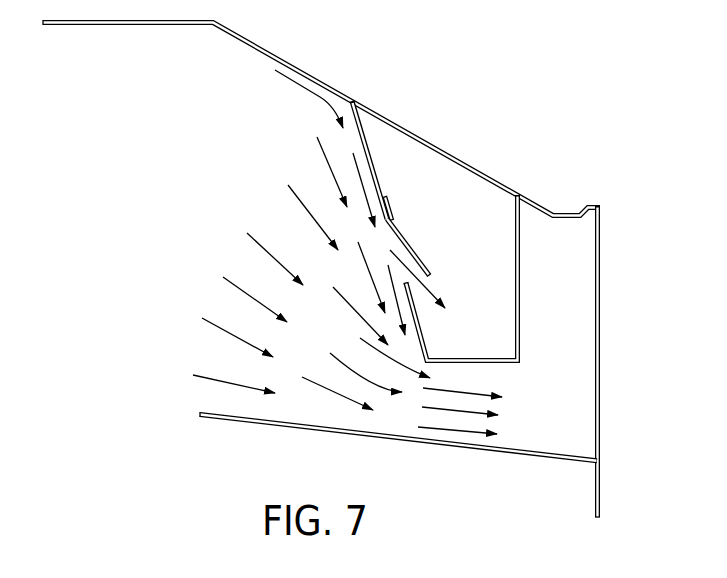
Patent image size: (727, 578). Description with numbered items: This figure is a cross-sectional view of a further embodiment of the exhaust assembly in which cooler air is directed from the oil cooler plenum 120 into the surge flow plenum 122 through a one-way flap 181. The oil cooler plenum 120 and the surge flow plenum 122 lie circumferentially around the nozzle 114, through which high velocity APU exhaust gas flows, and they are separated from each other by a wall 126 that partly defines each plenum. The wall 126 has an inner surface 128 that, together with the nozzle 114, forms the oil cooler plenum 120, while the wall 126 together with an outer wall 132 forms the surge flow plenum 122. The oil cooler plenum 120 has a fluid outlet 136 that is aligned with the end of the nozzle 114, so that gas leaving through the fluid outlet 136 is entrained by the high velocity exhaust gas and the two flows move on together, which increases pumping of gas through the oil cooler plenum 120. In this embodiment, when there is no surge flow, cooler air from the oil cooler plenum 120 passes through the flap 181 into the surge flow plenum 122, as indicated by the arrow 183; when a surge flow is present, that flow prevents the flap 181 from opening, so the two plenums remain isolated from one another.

The nozzle 114 is at (475, 448).
The oil cooler plenum 120 is at (577, 433).
The surge flow plenum 122 is at (405, 150).
The wall 126 is at (379, 186).
The inner surface 128 is at (507, 365).
The outer wall 132 is at (458, 158).
The fluid outlet 136 is at (600, 328).
The flap 181 is at (420, 255).
The arrow 183 is at (428, 292).